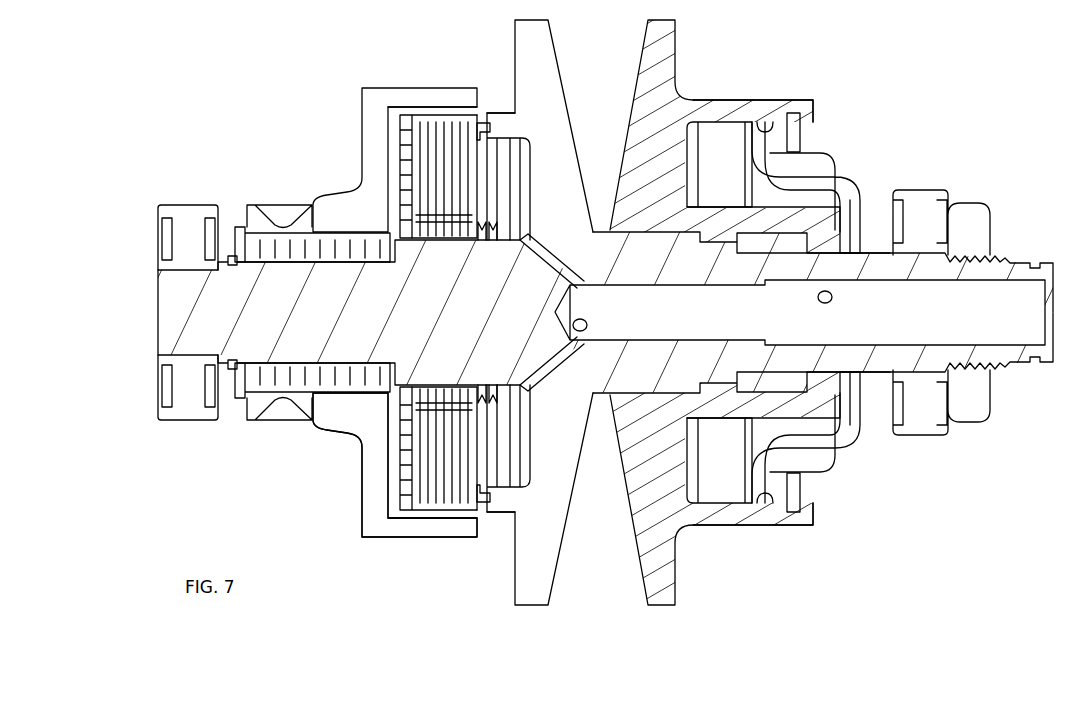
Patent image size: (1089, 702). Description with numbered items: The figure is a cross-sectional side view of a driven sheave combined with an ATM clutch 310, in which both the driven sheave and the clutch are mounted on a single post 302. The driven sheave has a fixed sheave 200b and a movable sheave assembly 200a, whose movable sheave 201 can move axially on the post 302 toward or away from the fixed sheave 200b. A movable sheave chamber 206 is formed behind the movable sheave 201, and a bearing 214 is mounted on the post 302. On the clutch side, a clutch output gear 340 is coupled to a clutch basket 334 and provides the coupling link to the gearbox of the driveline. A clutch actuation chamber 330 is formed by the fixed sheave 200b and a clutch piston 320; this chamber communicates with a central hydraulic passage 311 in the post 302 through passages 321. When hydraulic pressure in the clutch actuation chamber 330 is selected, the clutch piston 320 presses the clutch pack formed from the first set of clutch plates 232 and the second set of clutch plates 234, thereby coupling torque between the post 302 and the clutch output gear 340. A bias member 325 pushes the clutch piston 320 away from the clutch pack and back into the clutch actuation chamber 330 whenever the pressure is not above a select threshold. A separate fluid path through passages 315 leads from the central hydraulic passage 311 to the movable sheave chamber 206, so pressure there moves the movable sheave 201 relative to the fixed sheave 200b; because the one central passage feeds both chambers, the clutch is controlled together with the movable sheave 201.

The movable sheave assembly 200a is at (722, 56).
The fixed sheave 200b is at (575, 54).
The movable sheave 201 is at (680, 72).
The movable sheave chamber 206 is at (815, 436).
The bearing 214 is at (928, 196).
The first set of clutch plates 232 is at (428, 215).
The second set of clutch plates 234 is at (452, 210).
The post 302 is at (405, 318).
The ATM clutch 310 is at (333, 110).
The central hydraulic passage 311 is at (985, 325).
The passages 315 is at (828, 290).
The clutch piston 320 is at (478, 132).
The passages 321 is at (543, 257).
The bias member 325 is at (491, 490).
The clutch actuation chamber 330 is at (520, 462).
The clutch basket 334 is at (372, 518).
The clutch output gear 340 is at (283, 240).